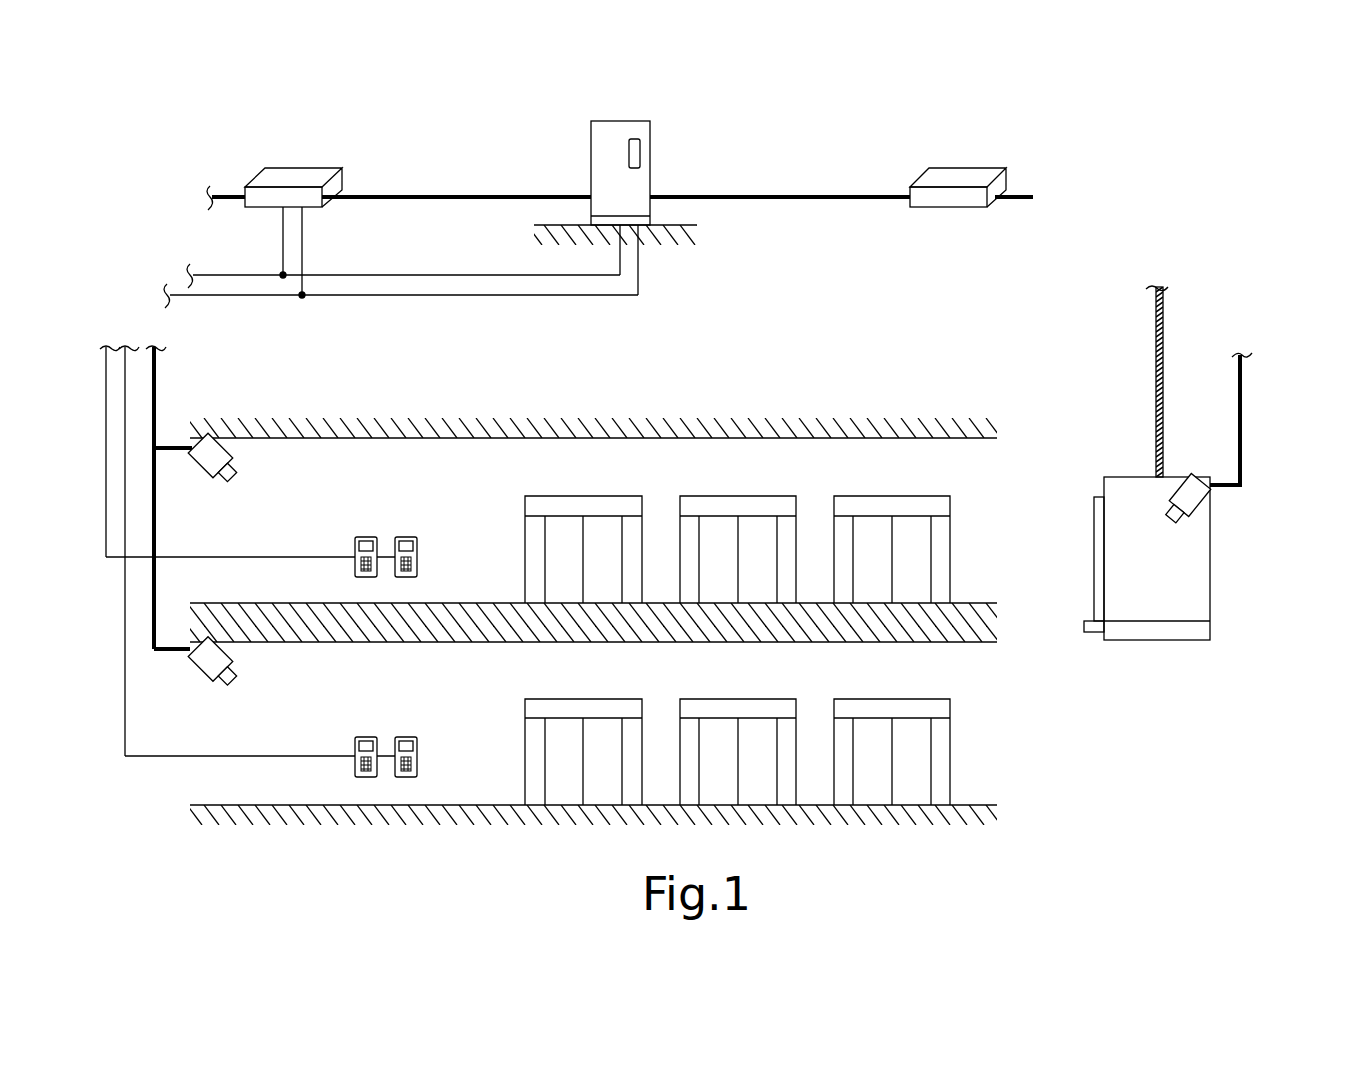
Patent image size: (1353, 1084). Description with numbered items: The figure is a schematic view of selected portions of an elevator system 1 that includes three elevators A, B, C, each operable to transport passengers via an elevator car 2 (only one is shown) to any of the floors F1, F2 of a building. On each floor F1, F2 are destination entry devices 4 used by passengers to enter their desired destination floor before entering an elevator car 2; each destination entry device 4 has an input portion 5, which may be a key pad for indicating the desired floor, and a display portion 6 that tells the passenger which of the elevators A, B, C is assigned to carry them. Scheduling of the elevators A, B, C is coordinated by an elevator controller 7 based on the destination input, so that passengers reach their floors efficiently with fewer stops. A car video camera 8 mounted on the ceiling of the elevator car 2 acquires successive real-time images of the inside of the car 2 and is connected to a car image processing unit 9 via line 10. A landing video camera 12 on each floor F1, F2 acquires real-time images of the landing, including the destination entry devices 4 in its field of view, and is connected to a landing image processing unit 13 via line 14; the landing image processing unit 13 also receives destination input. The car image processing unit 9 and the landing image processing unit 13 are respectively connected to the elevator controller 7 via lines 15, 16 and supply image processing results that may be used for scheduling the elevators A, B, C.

The elevator system 1 is at (1211, 106).
The elevator car 2 is at (1127, 477).
The destination entry device 4 is at (365, 537).
The input portion 5 is at (357, 560).
The display portion 6 is at (359, 544).
The elevator controller 7 is at (650, 140).
The car video camera 8 is at (1200, 505).
The car image processing unit 9 is at (993, 168).
The line 10 is at (1013, 198).
The landing video camera 12 is at (228, 448).
The landing image processing unit 13 is at (287, 167).
The line 14 is at (232, 193).
The line 15 is at (430, 195).
The line 16 is at (783, 195).
The elevator A is at (572, 496).
The elevator B is at (727, 496).
The elevator C is at (880, 496).
The floor F1 is at (975, 805).
The floor F2 is at (977, 603).